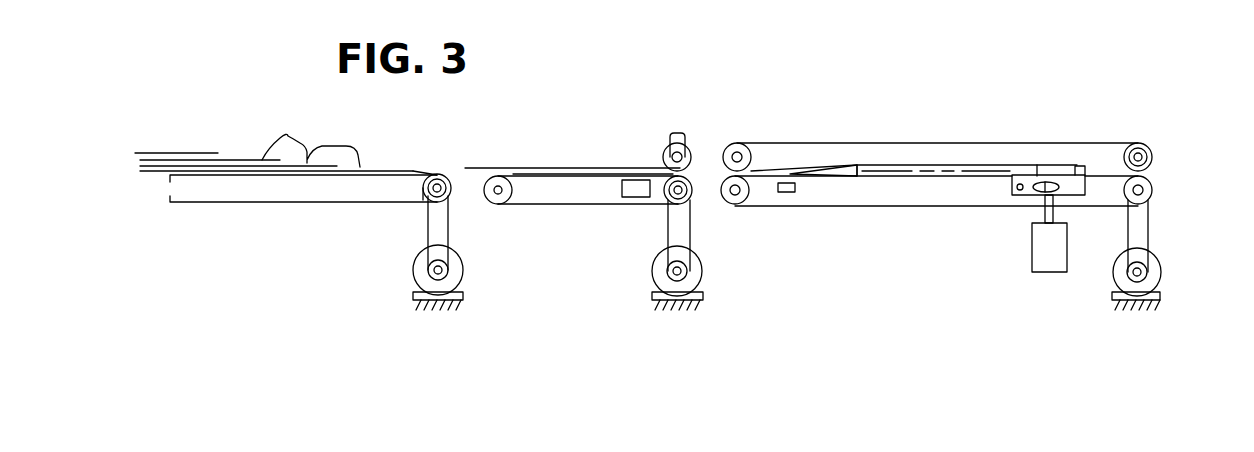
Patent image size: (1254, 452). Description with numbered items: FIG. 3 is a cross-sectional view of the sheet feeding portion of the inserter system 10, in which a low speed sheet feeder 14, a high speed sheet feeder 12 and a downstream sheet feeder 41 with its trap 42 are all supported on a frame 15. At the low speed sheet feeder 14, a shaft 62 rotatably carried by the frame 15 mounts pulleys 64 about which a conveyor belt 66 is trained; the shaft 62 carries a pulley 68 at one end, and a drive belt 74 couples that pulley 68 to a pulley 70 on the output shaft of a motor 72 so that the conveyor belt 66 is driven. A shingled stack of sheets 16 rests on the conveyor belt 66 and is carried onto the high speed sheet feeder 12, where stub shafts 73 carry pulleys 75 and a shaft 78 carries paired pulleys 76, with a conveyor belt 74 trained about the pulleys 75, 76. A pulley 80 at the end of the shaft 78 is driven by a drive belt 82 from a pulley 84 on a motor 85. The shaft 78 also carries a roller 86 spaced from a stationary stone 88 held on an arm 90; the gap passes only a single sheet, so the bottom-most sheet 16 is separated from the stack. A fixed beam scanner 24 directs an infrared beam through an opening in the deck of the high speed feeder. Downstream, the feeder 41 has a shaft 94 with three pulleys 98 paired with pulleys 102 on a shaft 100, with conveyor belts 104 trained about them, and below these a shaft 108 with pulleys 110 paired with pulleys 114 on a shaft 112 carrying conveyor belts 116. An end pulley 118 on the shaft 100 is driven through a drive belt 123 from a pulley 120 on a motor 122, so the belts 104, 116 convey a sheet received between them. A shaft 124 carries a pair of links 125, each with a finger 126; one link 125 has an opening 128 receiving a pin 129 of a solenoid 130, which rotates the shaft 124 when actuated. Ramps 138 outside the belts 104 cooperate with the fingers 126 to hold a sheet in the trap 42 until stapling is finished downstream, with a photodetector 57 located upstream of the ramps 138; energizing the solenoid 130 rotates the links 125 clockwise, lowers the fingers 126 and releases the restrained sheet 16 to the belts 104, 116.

The inserter system 10 is at (171, 0).
The high speed sheet feeder 12 is at (567, 129).
The low speed sheet feeder 14 is at (228, 218).
The frame 15 is at (462, 300).
The sheets 16 is at (288, 130).
The fixed beam scanner 24 is at (633, 198).
The sheet feeder 41 is at (855, 255).
The trap 42 is at (929, 185).
The photodetector 57 is at (795, 188).
The shafts 62 is at (437, 174).
The pulleys 64 is at (448, 174).
The conveyor belt 66 is at (413, 175).
The pulley 68 is at (423, 190).
The pulley 70 is at (414, 278).
The motor 72 is at (418, 292).
The stub shafts 73 is at (500, 204).
The drive belt 74 is at (427, 215).
The pulley 75 is at (514, 200).
The pulleys 76 is at (670, 194).
The shaft 78 is at (689, 222).
The pulley 80 is at (670, 198).
The drive belt 82 is at (691, 242).
The pulley 84 is at (658, 281).
The motor 85 is at (703, 283).
The roller 86 is at (693, 178).
The stationary stone 88 is at (690, 146).
The arm 90 is at (671, 133).
The shaft 94 is at (748, 152).
The pulleys 98 is at (732, 143).
The shaft 100 is at (1153, 148).
The pulleys 102 is at (1115, 150).
The conveyor belts 104 is at (940, 142).
The shaft 108 is at (750, 198).
The pulleys 110 is at (747, 193).
The shaft 112 is at (1150, 207).
The pulleys 114 is at (1153, 185).
The conveyor belts 116 is at (993, 210).
The end pulley 118 is at (1133, 143).
The pulley 120 is at (1143, 257).
The motor 122 is at (1160, 272).
The drive belt 123 is at (1152, 228).
The shaft 124 is at (1021, 195).
The links 125 is at (1045, 176).
The finger 126 is at (1068, 173).
The opening 128 is at (1037, 196).
The pin 129 is at (1043, 170).
The solenoid 130 is at (1048, 272).
The ramps 138 is at (837, 170).